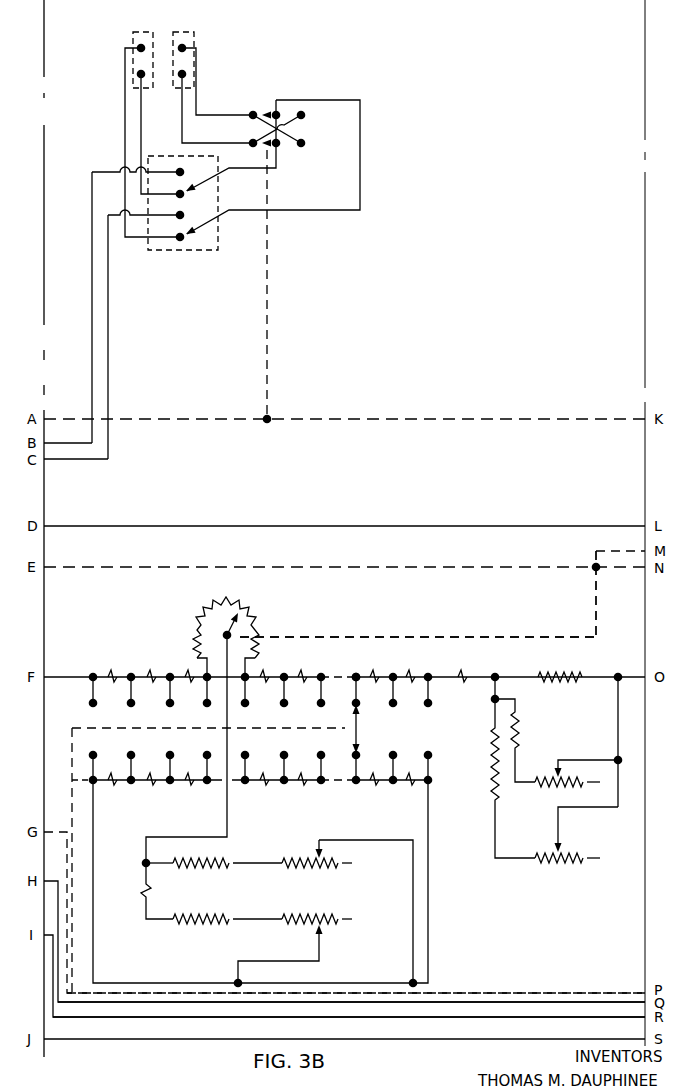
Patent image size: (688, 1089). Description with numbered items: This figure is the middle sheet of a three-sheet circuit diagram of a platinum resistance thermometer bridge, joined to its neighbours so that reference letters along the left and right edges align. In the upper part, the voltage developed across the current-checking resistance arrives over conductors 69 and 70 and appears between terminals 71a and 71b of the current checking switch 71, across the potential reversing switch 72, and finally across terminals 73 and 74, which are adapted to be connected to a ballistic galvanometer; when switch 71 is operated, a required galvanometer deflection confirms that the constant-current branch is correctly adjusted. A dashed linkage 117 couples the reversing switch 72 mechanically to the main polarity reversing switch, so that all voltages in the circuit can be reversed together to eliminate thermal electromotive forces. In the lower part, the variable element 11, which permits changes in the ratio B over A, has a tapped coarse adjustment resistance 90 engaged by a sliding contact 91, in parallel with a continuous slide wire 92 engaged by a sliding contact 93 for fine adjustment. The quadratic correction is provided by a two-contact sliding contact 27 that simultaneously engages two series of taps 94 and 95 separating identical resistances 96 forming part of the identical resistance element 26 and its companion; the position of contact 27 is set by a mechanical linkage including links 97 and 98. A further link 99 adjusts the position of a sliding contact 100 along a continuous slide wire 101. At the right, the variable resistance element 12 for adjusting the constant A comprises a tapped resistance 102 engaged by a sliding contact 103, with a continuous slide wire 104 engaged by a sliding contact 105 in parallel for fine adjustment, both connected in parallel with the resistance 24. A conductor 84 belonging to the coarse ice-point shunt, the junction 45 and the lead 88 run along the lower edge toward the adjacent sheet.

The variable element 11 is at (344, 718).
The variable resistance element 12 is at (498, 868).
The resistance 24 is at (540, 680).
The resistance element 26 is at (269, 791).
The two-contact sliding contact 27 is at (360, 722).
The junction point 45 is at (372, 669).
The conductor 69 is at (92, 370).
The conductor 70 is at (108, 368).
The current checking switch 71 is at (171, 209).
The terminal 71a is at (180, 172).
The terminal 71b is at (180, 215).
The potential reversing switch 72 is at (272, 168).
The terminal 73 is at (186, 77).
The terminal 74 is at (196, 50).
The conductor 84 is at (548, 1002).
The lead 88 is at (495, 1017).
The tapped coarse adjustment resistance 90 is at (333, 868).
The sliding contact 91 is at (357, 840).
The continuous slide wire 92 is at (295, 928).
The sliding contact 93 is at (320, 950).
The taps 94 is at (432, 703).
The taps 95 is at (432, 755).
The identical resistances 96 is at (420, 672).
The link 97 is at (73, 790).
The link 98 is at (484, 990).
The link 99 is at (432, 640).
The sliding contact 100 is at (226, 604).
The continuous slide wire 101 is at (243, 630).
The tapped resistance 102 is at (558, 789).
The sliding contact 103 is at (558, 762).
The continuous slide wire 104 is at (558, 862).
The sliding contact 105 is at (565, 831).
The linkage 117 is at (272, 285).